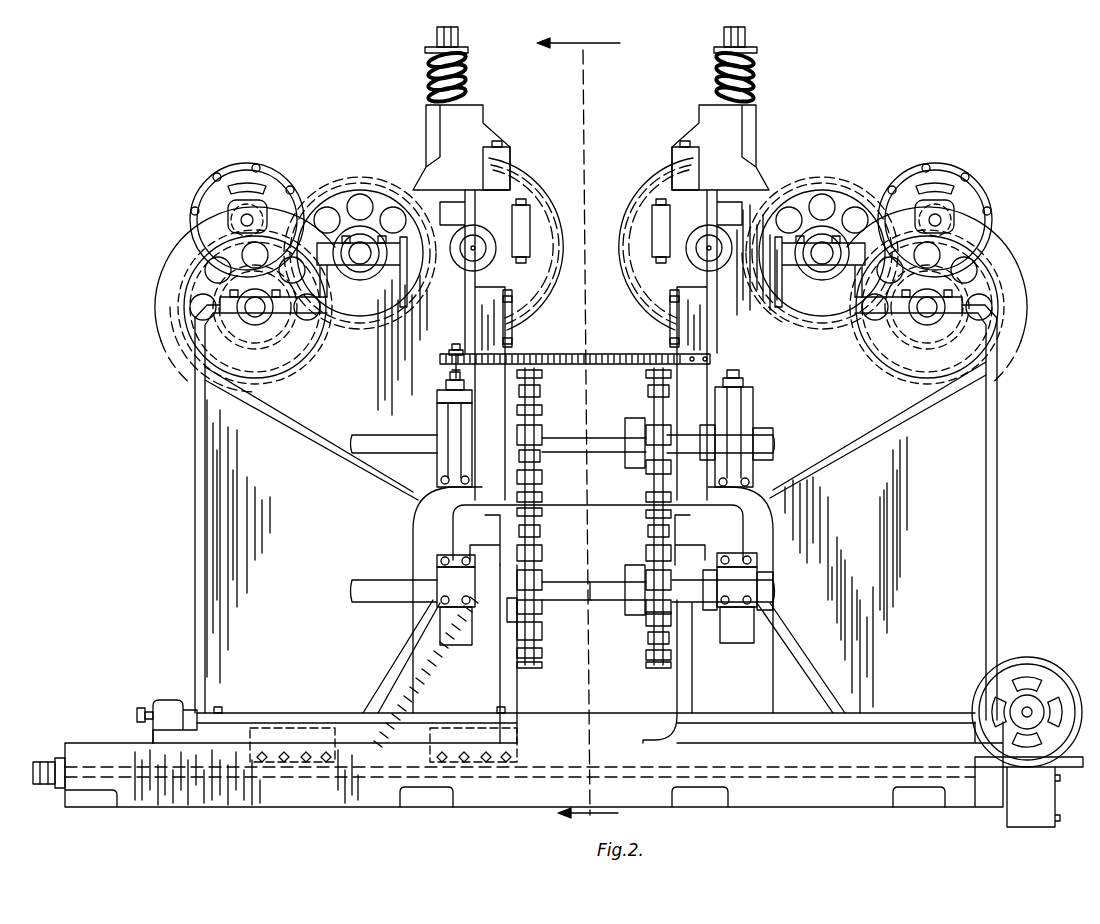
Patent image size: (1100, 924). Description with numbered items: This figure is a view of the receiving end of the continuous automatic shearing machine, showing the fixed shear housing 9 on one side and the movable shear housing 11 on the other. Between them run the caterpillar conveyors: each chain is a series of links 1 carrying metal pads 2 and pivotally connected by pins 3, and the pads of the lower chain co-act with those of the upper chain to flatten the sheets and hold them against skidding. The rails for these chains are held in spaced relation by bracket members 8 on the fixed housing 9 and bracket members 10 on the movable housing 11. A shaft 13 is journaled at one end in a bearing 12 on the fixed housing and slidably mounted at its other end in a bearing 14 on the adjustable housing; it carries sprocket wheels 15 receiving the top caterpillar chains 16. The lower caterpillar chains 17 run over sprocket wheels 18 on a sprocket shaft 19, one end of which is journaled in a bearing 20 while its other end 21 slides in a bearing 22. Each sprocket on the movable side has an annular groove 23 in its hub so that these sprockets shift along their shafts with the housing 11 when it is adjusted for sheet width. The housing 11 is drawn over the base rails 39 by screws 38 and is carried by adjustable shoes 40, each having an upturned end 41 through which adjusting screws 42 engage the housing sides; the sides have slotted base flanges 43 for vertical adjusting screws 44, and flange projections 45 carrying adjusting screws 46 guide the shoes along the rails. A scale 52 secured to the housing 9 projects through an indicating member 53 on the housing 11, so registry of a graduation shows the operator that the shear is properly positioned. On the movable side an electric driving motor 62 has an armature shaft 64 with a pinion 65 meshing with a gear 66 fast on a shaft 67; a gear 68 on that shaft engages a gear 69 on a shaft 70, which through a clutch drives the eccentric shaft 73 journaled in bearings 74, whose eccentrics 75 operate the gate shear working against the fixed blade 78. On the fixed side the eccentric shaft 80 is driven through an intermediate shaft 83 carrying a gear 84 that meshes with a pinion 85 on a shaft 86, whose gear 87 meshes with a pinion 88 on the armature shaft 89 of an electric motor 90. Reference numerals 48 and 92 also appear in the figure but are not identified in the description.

The links 1 is at (672, 628).
The metal pads 2 is at (648, 645).
The pins 3 is at (586, 431).
The bracket members 8 is at (685, 498).
The fixed shear housing 9 is at (891, 512).
The bracket members 10 is at (542, 500).
The movable shear housing 11 is at (257, 509).
The bearing 12 is at (750, 437).
The shaft 13 is at (625, 432).
The bearing 14 is at (437, 435).
The sprocket wheels 15 is at (633, 418).
The top caterpillar conveyor chains 16 is at (646, 480).
The lower caterpillar conveyor chains 17 is at (655, 665).
The sprocket wheels 18 is at (520, 612).
The sprocket shaft 19 is at (592, 600).
The bearing 20 is at (762, 595).
The shaft end 21 is at (386, 586).
The bearing 22 is at (437, 598).
The annular groove 23 is at (540, 572).
The screws 38 is at (500, 780).
The base rails 39 is at (300, 808).
The adjustable shoes 40 is at (352, 778).
The upturned end 41 is at (170, 700).
The adjusting screws 42 is at (146, 708).
The base flanges 43 is at (250, 713).
The vertical adjusting screws 44 is at (500, 707).
The flange projections 45 is at (446, 728).
The adjusting screws 46 is at (280, 750).
The handwheel 48 is at (1033, 709).
The scale 52 is at (655, 354).
The indicating member 53 is at (465, 350).
The electric driving motor 62 is at (276, 184).
The armature shaft 64 is at (228, 232).
The pinion 65 is at (220, 188).
The gear 66 is at (160, 305).
The shaft 67 is at (258, 325).
The gear 68 is at (300, 345).
The gear 69 is at (270, 349).
The shaft 70 is at (364, 272).
The eccentric shaft 73 is at (460, 250).
The bearings 74 is at (480, 200).
The eccentrics 75 is at (520, 228).
The fixed blade 78 is at (486, 522).
The eccentric shaft 80 is at (718, 240).
The intermediate shaft 83 is at (822, 268).
The gear 84 is at (828, 335).
The pinion 85 is at (917, 357).
The shaft 86 is at (935, 320).
The gear 87 is at (1005, 300).
The pinion 88 is at (956, 236).
The armature shaft 89 is at (985, 206).
The electric motor 90 is at (985, 186).
The sprocket 92 is at (646, 528).